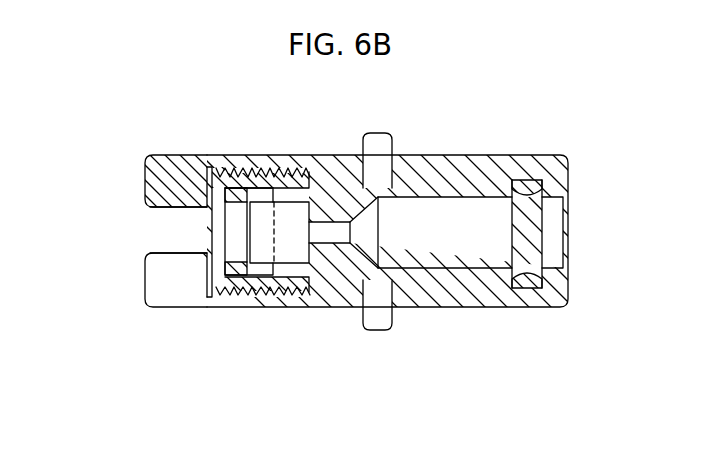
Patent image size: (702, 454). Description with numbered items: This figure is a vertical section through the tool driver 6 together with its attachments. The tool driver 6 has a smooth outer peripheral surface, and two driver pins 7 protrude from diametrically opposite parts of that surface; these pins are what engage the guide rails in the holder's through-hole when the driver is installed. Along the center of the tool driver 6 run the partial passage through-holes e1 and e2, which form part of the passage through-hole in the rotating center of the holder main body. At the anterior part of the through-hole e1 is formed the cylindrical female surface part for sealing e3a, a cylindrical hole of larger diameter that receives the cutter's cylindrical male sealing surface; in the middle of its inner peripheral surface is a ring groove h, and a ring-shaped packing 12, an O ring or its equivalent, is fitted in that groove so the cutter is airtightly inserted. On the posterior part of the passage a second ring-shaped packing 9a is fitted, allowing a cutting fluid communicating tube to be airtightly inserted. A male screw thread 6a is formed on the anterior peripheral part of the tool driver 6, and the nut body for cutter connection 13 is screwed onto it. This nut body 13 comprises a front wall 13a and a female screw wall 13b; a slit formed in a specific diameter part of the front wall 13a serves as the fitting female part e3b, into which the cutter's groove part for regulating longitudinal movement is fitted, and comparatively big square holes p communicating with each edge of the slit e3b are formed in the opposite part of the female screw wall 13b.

The tool driver 6 is at (460, 163).
The male screw thread 6a is at (267, 303).
The driver pin 7 is at (378, 147).
The ring-shaped packing 9a is at (530, 288).
The ring-shaped packing 12 is at (230, 307).
The nut body for cutter connection 13 is at (171, 152).
The front wall 13a is at (155, 300).
The female screw wall 13b is at (231, 157).
The ring groove h is at (242, 274).
The square hole p is at (330, 235).
The partial passage through-hole e1 is at (329, 235).
The partial passage through-hole e2 is at (428, 258).
The cylindrical female surface part for sealing e3a is at (288, 207).
The fitting female part e3b is at (153, 230).